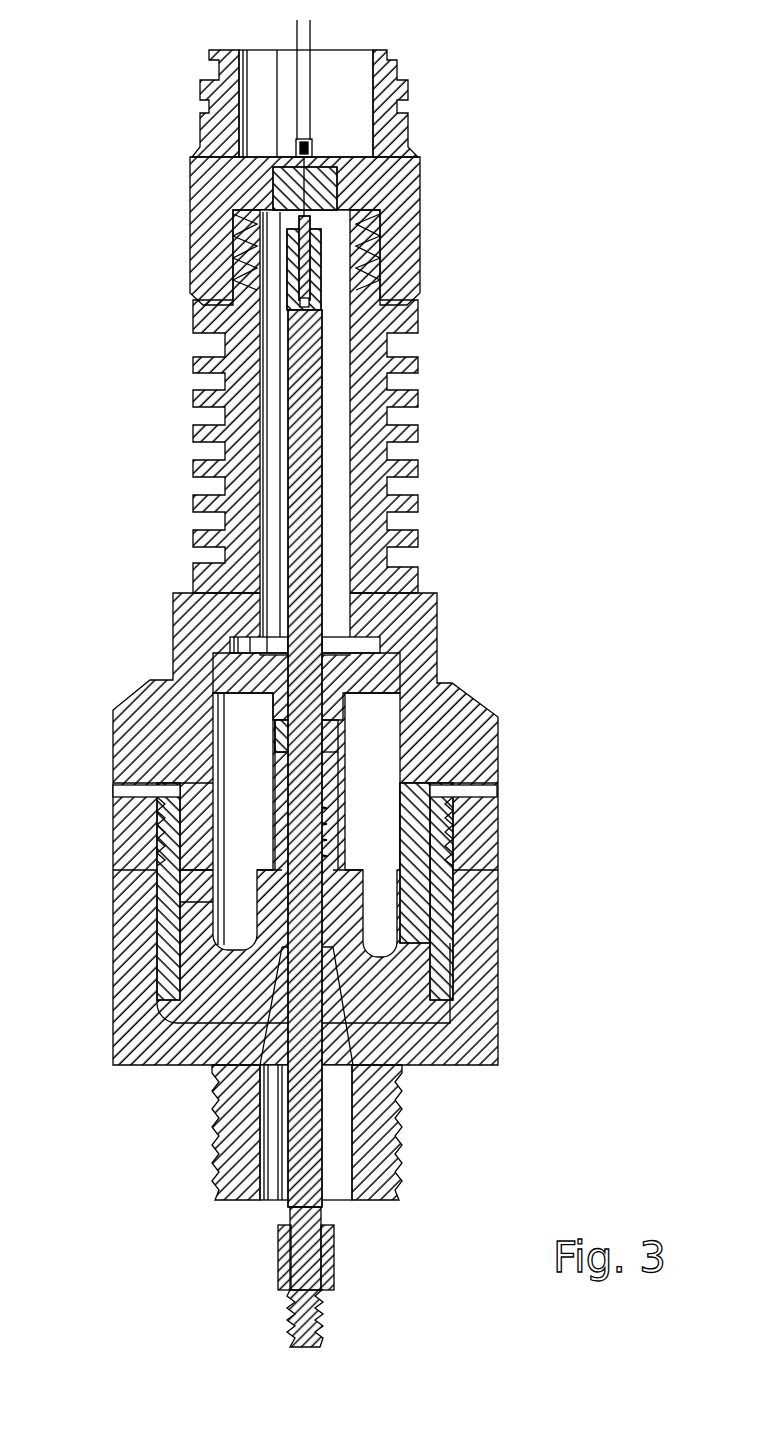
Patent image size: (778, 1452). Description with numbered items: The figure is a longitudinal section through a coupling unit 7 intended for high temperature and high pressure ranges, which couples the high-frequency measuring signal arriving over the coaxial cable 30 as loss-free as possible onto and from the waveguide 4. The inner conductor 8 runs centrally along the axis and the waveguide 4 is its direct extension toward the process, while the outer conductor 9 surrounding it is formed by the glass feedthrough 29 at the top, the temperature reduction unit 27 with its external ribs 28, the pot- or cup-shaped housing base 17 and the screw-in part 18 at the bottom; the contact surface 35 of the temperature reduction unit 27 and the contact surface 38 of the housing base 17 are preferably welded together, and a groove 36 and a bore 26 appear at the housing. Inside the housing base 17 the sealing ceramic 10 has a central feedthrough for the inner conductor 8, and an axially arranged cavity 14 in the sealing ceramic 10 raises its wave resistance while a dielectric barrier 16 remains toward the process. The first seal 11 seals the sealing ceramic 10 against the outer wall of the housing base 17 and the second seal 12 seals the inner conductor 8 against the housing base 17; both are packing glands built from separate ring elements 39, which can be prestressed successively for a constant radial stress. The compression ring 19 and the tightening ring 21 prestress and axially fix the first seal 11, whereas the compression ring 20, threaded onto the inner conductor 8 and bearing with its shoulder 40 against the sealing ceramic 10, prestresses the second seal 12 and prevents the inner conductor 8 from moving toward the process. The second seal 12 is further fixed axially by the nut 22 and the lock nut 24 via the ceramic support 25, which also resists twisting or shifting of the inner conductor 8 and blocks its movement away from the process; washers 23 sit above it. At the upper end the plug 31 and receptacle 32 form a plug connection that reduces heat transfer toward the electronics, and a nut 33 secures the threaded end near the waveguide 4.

The waveguide 4 is at (312, 1358).
The coupling unit 7 is at (455, 556).
The inner conductor 8 is at (315, 410).
The outer conductor 9 is at (465, 800).
The sealing ceramic 10 is at (207, 997).
The first seal 11 is at (455, 955).
The second seal 12 is at (287, 902).
The cavity 14 is at (393, 917).
The insulating taper 16 is at (335, 990).
The housing base 17 is at (473, 1045).
The screw-in part 18 is at (213, 1140).
The compression ring 19 is at (445, 885).
The compression ring 20 is at (330, 855).
The tightening ring 21 is at (457, 837).
The nut 22 is at (318, 782).
The washer 23 is at (215, 640).
The lock nut 24 is at (338, 737).
The ceramic support 25 is at (385, 668).
The bore 26 is at (212, 1068).
The temperature reduction unit 27 is at (380, 466).
The insulator 28 is at (340, 372).
The glass feedthrough 29 is at (392, 197).
The coaxial cable 30 is at (312, 38).
The plug 31 is at (320, 258).
The receptacle 32 is at (299, 258).
The nut 33 is at (334, 1243).
The contact surface 35 is at (130, 770).
The groove 36 is at (125, 797).
The contact surface 38 is at (210, 940).
The ring elements 39 is at (450, 993).
The shoulder 40 is at (160, 873).